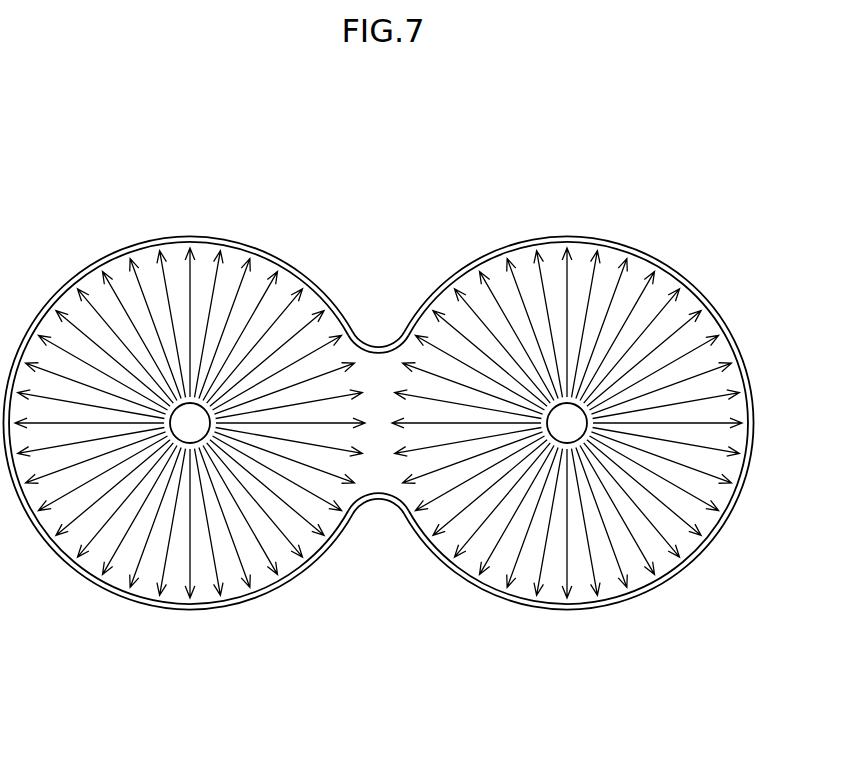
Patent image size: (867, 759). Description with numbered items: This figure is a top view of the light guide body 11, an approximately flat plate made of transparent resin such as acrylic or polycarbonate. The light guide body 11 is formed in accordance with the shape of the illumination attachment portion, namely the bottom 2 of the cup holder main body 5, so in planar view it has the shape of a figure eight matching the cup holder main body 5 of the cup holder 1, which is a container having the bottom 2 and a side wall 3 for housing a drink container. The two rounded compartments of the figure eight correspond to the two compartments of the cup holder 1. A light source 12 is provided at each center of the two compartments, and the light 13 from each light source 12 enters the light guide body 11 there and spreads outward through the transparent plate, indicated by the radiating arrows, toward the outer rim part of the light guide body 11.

The cup holder 1 is at (522, 215).
The bottom 2 is at (662, 290).
The side wall 3 is at (633, 242).
The cup holder main body 5 is at (618, 141).
The light guide body 11 is at (381, 387).
The light source 12 is at (191, 432).
The light 13 is at (77, 520).